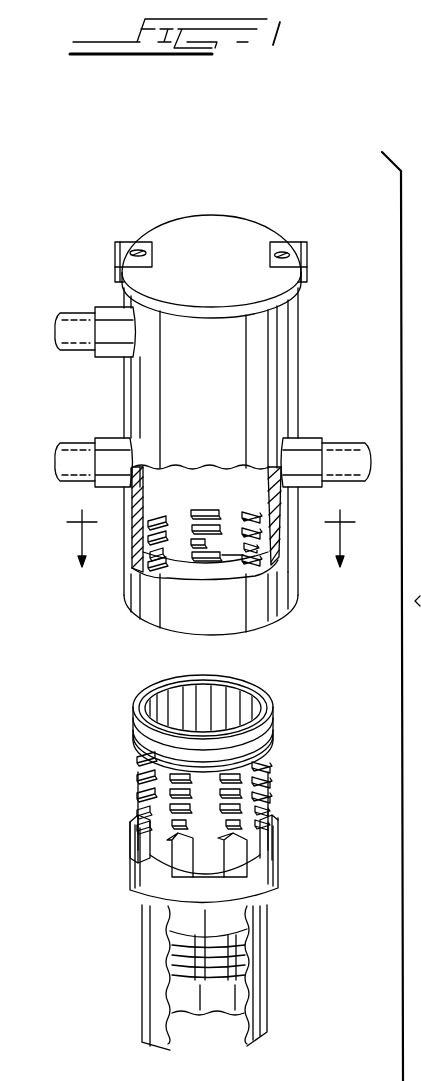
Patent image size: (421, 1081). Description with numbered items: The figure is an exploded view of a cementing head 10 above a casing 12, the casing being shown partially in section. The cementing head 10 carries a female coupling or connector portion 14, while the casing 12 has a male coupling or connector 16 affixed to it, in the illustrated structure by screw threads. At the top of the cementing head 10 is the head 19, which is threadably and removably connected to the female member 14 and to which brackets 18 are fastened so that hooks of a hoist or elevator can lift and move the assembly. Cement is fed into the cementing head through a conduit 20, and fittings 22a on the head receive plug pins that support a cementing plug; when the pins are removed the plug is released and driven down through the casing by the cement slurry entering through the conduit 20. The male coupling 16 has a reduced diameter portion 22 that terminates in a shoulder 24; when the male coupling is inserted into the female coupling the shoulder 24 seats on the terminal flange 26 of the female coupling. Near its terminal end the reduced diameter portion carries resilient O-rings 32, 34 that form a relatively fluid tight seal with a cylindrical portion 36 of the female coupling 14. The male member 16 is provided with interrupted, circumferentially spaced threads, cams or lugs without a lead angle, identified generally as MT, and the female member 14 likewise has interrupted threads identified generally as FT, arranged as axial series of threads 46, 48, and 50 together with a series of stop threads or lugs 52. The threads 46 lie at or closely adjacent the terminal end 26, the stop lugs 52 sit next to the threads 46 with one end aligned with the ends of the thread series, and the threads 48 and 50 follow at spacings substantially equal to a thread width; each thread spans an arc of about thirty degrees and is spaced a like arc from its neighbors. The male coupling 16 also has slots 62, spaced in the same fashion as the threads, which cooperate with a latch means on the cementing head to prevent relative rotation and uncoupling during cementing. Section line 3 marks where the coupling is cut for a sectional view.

The cementing head 10 is at (301, 381).
The casing 12 is at (270, 972).
The female coupling portion 14 is at (256, 510).
The male coupling 16 is at (272, 801).
The brackets 18 is at (122, 250).
The head 19 is at (240, 232).
The conduit 20 is at (85, 322).
The reduced diameter portion 22 is at (272, 807).
The fittings 22a is at (73, 440).
The shoulder 24 is at (136, 813).
The terminal flange 26 is at (265, 619).
The O-ring 32 is at (272, 757).
The O-ring 34 is at (273, 724).
The cylindrical portion 36 is at (138, 490).
The threads 46 is at (197, 562).
The threads 48 is at (226, 534).
The threads 50 is at (172, 520).
The stop threads 52 is at (195, 541).
The slots 62 is at (265, 844).
The section line 3- 3 is at (213, 531).
The female threads FT is at (276, 545).
The male threads MT is at (129, 795).